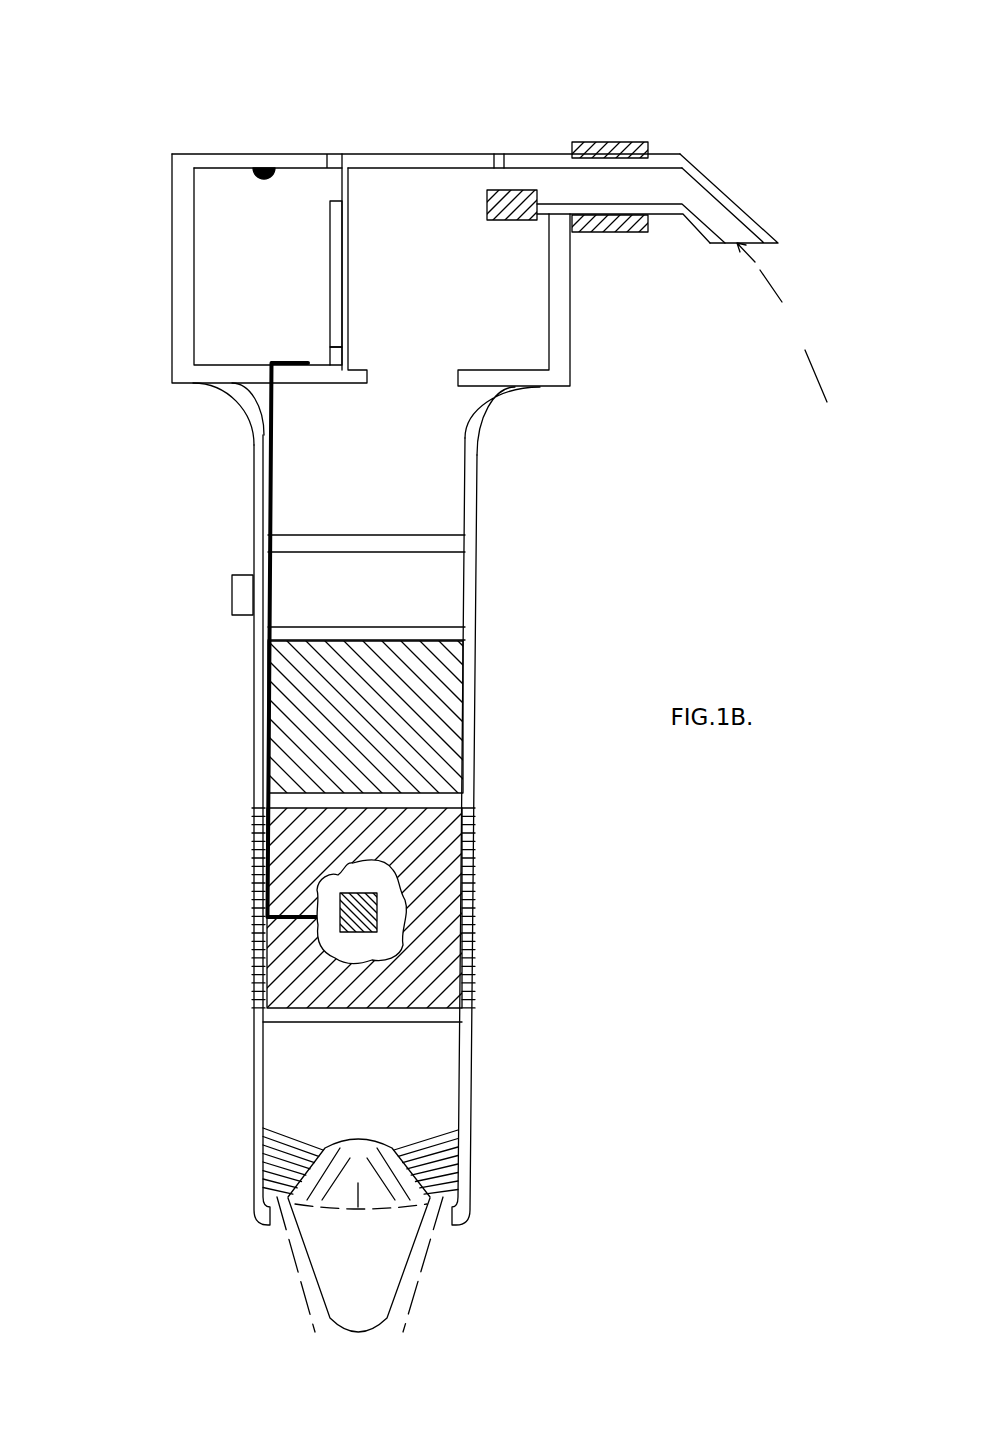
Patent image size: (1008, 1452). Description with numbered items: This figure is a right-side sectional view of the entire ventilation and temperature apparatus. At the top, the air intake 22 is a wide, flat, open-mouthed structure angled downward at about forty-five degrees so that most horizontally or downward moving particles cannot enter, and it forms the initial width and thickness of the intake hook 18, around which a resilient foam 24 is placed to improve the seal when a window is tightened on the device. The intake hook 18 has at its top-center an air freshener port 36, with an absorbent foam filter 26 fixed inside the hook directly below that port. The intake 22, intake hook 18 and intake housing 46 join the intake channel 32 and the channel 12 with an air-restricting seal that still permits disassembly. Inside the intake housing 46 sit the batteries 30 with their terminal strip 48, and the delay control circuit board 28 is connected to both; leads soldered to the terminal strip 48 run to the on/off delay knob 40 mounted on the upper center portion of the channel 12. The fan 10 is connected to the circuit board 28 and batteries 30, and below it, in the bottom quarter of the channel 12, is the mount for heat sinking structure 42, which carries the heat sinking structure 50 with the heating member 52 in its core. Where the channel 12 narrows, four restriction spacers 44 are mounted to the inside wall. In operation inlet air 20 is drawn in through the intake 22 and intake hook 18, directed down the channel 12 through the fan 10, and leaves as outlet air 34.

The fan 10 is at (448, 716).
The channel 12 is at (477, 606).
The intake hook 18 is at (677, 157).
The inlet air 20 is at (782, 322).
The air intake 22 is at (745, 208).
The resilient foam 24 is at (628, 141).
The absorbent foam filter 26 is at (487, 190).
The delay control circuit board 28 is at (330, 228).
The batteries 30 is at (222, 266).
The intake channel 32 is at (478, 448).
The outlet air 34 is at (463, 1293).
The air freshener port 36 is at (505, 158).
The on/off delay knob 40 is at (231, 603).
The mount for heat sinking structure 42 is at (470, 967).
The restriction spacers 44 is at (287, 1133).
The intake housing 46 is at (393, 153).
The terminal strip 48 is at (289, 359).
The heat sinking structure 50 is at (448, 865).
The heating member 52 is at (377, 910).